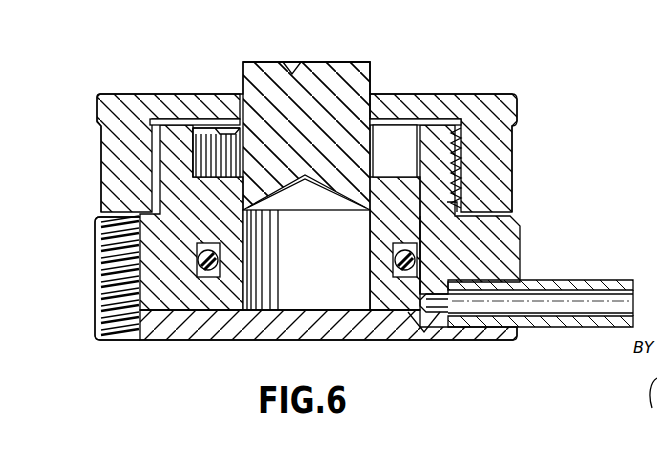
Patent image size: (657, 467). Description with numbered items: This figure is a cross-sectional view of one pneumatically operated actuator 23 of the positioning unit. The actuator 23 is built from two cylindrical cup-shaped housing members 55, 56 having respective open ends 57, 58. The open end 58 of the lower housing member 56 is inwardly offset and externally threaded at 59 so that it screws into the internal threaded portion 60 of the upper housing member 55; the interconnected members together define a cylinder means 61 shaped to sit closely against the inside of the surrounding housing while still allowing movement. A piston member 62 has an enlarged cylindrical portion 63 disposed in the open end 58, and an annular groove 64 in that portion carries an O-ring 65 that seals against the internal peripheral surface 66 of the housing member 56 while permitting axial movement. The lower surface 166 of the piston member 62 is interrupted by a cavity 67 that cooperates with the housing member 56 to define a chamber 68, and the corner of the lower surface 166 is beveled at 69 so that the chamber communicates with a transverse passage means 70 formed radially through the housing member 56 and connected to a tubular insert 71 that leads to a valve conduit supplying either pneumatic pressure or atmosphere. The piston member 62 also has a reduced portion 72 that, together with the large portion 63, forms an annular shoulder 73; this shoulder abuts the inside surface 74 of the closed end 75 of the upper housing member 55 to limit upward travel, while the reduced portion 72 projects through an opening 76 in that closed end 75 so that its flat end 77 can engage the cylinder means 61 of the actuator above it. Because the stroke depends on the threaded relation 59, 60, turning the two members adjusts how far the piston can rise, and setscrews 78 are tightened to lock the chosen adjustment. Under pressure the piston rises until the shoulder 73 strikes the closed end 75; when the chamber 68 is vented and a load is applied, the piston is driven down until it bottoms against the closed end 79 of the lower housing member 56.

The actuator 23 is at (555, 103).
The cup-shaped housing member 55 is at (437, 98).
The cup-shaped housing member 56 is at (505, 237).
The open end 57 is at (480, 206).
The open end 58 is at (440, 120).
The external thread 59 is at (465, 156).
The internal threaded portion 60 is at (465, 182).
The cylinder means 61 is at (96, 167).
The piston member 62 is at (381, 112).
The enlarged cylindrical portion 63 is at (402, 233).
The annular groove 64 is at (399, 300).
The O-ring 65 is at (455, 268).
The internal peripheral surface 66 is at (185, 152).
The cavity 67 is at (372, 300).
The chamber 68 is at (312, 282).
The bevel 69 is at (195, 312).
The transverse passage means 70 is at (437, 328).
The tubular insert 71 is at (583, 283).
The reduced portion 72 is at (338, 73).
The annular shoulder 73 is at (228, 165).
The inside surface 74 is at (208, 128).
The closed end 75 is at (222, 128).
The opening 76 is at (392, 166).
The flat end 77 is at (264, 62).
The setscrews 78 is at (112, 267).
The closed end 79 is at (376, 322).
The lower surface 166 is at (222, 310).